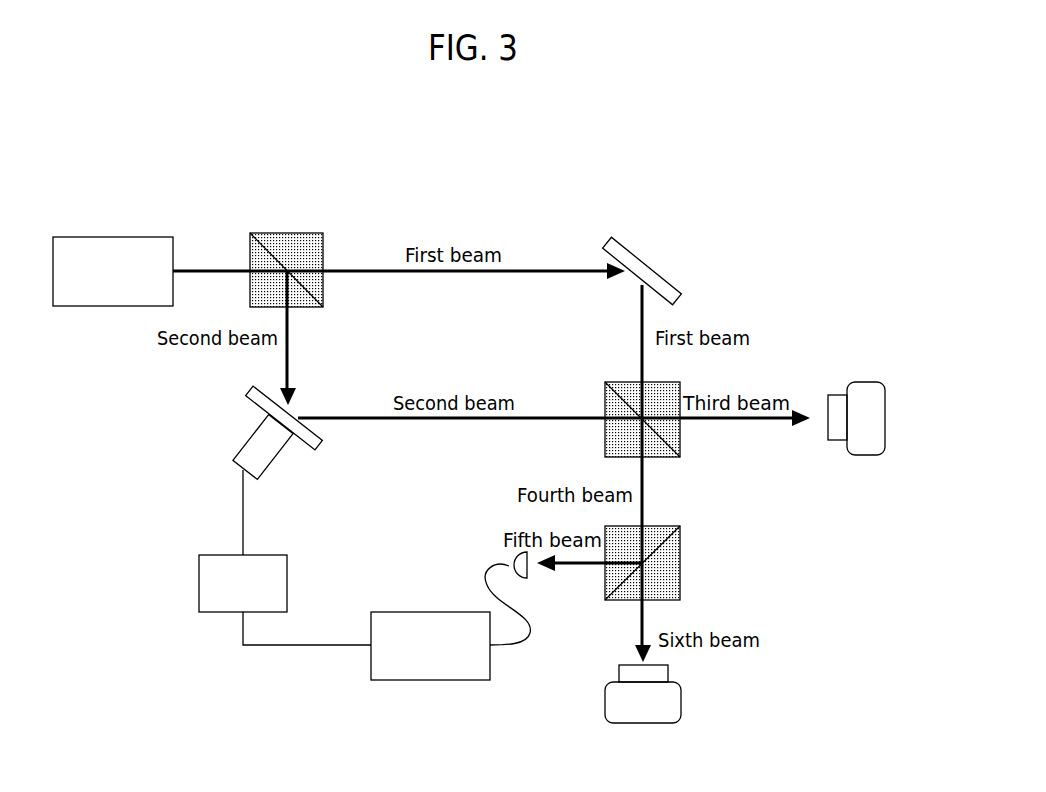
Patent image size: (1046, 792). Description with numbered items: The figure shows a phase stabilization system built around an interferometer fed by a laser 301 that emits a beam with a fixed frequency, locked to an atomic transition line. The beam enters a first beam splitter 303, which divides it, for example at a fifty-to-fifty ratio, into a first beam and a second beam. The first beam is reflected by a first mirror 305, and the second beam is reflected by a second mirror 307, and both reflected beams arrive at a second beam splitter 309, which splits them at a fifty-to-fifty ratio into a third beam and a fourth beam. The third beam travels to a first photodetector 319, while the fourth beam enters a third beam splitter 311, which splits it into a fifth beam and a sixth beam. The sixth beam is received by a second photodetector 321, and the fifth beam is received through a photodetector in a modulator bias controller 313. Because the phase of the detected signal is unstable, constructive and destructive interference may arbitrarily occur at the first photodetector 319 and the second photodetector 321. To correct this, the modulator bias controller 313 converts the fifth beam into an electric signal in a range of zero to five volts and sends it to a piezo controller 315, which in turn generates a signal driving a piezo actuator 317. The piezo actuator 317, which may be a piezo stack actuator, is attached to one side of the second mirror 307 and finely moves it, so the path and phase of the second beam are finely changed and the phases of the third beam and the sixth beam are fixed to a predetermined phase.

The laser 301 is at (113, 271).
The first beam splitter 303 is at (286, 240).
The first mirror 305 is at (673, 261).
The second mirror 307 is at (220, 413).
The second beam splitter 309 is at (725, 449).
The third beam splitter 311 is at (733, 565).
The modulator bias controller 313 is at (430, 645).
The piezo controller 315 is at (208, 600).
The piezo actuator 317 is at (185, 485).
The first photodetector 319 is at (866, 391).
The second photodetector 321 is at (747, 704).